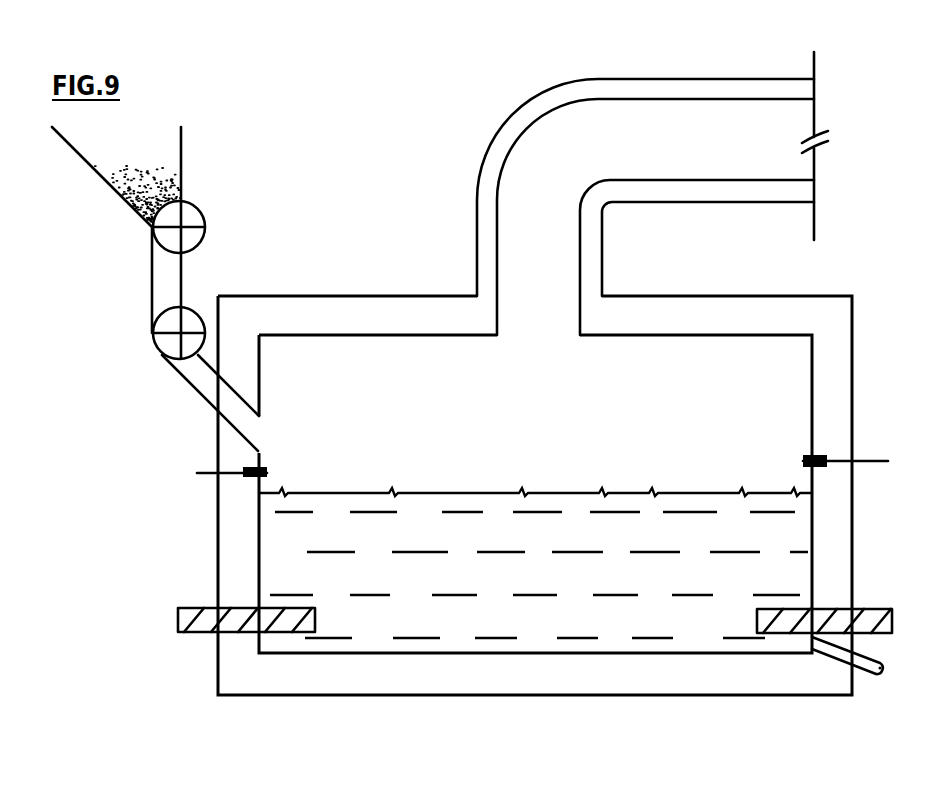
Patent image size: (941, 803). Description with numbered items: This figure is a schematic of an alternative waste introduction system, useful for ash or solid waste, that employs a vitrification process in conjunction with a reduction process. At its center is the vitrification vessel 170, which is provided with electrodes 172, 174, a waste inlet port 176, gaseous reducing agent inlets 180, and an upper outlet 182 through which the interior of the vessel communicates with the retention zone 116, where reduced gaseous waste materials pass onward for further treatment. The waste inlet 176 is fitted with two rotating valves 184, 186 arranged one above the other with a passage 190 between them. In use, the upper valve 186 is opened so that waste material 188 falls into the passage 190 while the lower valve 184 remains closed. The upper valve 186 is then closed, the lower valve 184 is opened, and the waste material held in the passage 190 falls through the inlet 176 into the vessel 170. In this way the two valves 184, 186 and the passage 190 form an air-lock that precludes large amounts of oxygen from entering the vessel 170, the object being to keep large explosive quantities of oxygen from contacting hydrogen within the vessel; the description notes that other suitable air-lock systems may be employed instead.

The retention zone 116 is at (747, 160).
The vitrification vessel 170 is at (184, 437).
The electrode 172 is at (193, 608).
The electrode 174 is at (860, 609).
The waste inlet port 176 is at (210, 388).
The gaseous reducing agent inlets 180 is at (203, 473).
The upper outlet 182 is at (542, 332).
The rotating valve 184 is at (150, 328).
The rotating valve 186 is at (203, 214).
The waste material 188 is at (182, 148).
The passage 190 is at (170, 280).